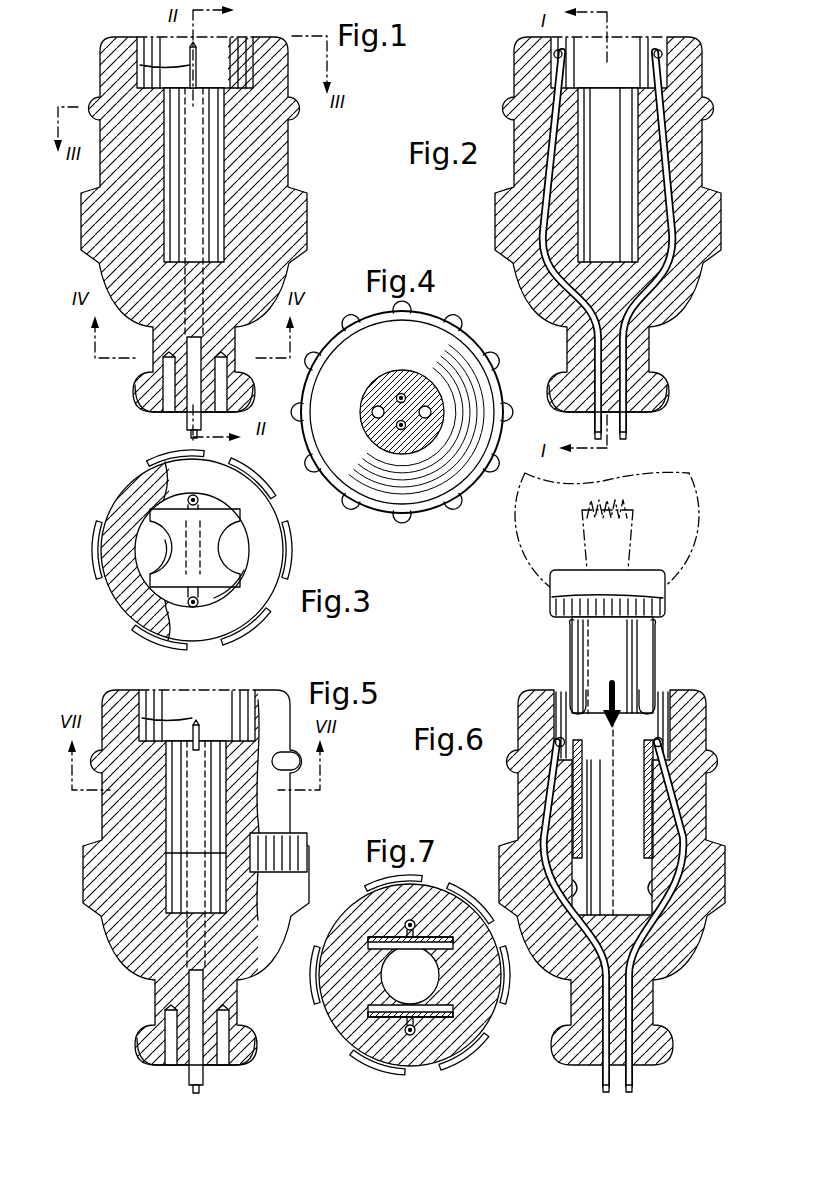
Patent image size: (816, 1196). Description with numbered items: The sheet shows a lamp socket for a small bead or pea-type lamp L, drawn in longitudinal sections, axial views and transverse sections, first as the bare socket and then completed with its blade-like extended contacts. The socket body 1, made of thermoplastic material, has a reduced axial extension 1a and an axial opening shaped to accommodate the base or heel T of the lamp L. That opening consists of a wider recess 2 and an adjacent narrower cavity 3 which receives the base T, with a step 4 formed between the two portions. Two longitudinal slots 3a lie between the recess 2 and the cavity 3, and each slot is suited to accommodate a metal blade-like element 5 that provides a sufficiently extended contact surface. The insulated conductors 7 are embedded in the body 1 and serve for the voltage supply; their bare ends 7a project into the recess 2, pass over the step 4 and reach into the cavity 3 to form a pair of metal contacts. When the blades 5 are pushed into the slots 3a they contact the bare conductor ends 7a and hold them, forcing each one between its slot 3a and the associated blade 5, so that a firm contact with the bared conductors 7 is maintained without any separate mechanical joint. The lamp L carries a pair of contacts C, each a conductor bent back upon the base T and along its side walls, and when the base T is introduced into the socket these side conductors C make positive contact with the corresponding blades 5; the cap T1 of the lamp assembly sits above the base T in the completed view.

In FIG. 1, the lamp socket body 1 is at (285, 155).
In FIG. 2, the lamp socket body 1 is at (527, 63).
In FIG. 3, the lamp socket body 1 is at (158, 513).
In FIG. 4, the lamp socket body 1 is at (371, 514).
In FIG. 5, the lamp socket body 1 is at (140, 953).
In FIG. 6, the lamp socket body 1 is at (688, 718).
In FIG. 1, the reduced axial extension 1a is at (140, 391).
In FIG. 2, the reduced axial extension 1a is at (670, 392).
In FIG. 4, the reduced axial extension 1a is at (410, 452).
In FIG. 5, the reduced axial extension 1a is at (140, 1044).
In FIG. 1, the recess 2 is at (153, 43).
In FIG. 2, the recess 2 is at (630, 45).
In FIG. 3, the recess 2 is at (243, 538).
In FIG. 5, the recess 2 is at (150, 705).
In FIG. 6, the recess 2 is at (665, 700).
In FIG. 1, the cavity 3 is at (215, 185).
In FIG. 2, the cavity 3 is at (575, 122).
In FIG. 3, the cavity 3 is at (172, 548).
In FIG. 5, the cavity 3 is at (175, 807).
In FIG. 6, the cavity 3 is at (625, 787).
In FIG. 7, the cavity 3 is at (395, 975).
In FIG. 3, the longitudinal slots 3a is at (153, 586).
In FIG. 6, the longitudinal slots 3a is at (652, 885).
In FIG. 7, the longitudinal slots 3a is at (440, 1018).
In FIG. 1, the step 4 is at (233, 85).
In FIG. 2, the step 4 is at (650, 90).
In FIG. 3, the step 4 is at (215, 600).
In FIG. 5, the step 4 is at (236, 738).
In FIG. 6, the metal blade-like element 5 is at (647, 827).
In FIG. 7, the metal blade-like element 5 is at (386, 937).
In FIG. 1, the insulated conductors 7 is at (190, 420).
In FIG. 2, the insulated conductors 7 is at (545, 292).
In FIG. 5, the insulated conductors 7 is at (195, 996).
In FIG. 6, the insulated conductors 7 is at (628, 998).
In FIG. 7, the insulated conductors 7 is at (418, 922).
In FIG. 1, the bare ends 7a is at (187, 65).
In FIG. 2, the bare ends 7a is at (563, 57).
In FIG. 3, the bare ends 7a is at (193, 608).
In FIG. 5, the bare ends 7a is at (196, 722).
In FIG. 6, the bare ends 7a is at (582, 727).
In FIG. 7, the bare ends 7a is at (410, 949).
In FIG. 6, the lamp L is at (692, 543).
In FIG. 6, the lamp cap T1 is at (668, 597).
In FIG. 6, the base T is at (582, 658).
In FIG. 6, the contacts C is at (570, 632).